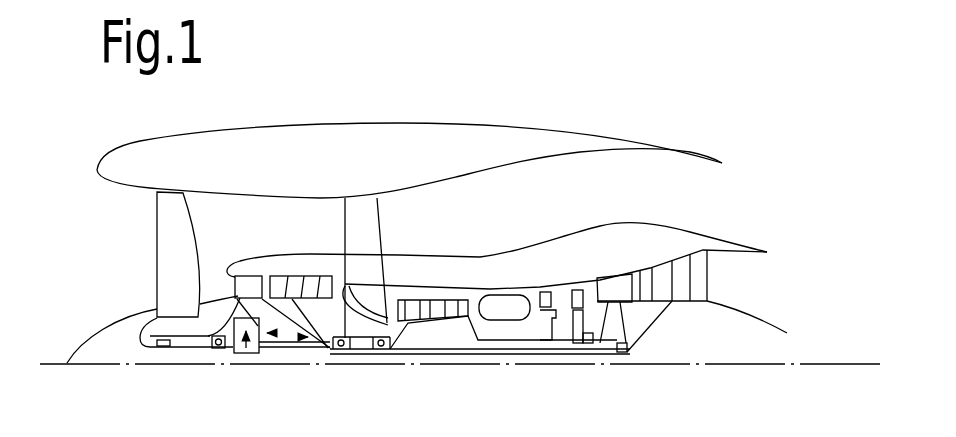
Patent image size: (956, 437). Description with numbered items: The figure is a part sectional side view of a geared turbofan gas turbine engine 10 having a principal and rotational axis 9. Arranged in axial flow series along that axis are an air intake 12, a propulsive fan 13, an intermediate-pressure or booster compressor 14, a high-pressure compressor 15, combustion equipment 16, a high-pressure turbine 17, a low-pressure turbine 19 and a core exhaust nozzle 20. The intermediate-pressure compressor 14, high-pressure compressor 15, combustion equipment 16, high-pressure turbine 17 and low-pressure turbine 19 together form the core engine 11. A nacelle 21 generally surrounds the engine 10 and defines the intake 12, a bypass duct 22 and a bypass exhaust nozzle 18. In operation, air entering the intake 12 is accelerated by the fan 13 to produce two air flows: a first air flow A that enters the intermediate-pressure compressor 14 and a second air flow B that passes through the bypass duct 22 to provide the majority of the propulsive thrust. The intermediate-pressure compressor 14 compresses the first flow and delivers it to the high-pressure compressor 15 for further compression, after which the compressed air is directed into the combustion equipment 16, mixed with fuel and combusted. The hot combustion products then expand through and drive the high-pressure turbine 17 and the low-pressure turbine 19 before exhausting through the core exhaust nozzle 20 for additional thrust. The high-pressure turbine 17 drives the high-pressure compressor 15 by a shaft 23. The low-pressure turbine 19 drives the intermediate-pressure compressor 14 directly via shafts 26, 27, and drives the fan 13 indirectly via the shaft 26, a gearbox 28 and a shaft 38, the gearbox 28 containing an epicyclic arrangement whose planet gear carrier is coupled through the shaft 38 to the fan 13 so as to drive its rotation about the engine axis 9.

The principal and rotational axis 9 is at (670, 366).
The geared turbofan gas turbine engine 10 is at (126, 142).
The core engine 11 is at (490, 270).
The air intake 12 is at (125, 201).
The propulsive fan 13 is at (163, 259).
The intermediate-pressure compressor 14 is at (312, 288).
The high-pressure compressor 15 is at (438, 308).
The combustion equipment 16 is at (503, 312).
The high-pressure turbine 17 is at (563, 295).
The bypass exhaust nozzle 18 is at (679, 183).
The low-pressure turbine 19 is at (683, 270).
The core exhaust nozzle 20 is at (743, 286).
The nacelle 21 is at (364, 140).
The bypass duct 22 is at (603, 197).
The shaft 23 is at (515, 343).
The shaft 26 is at (433, 353).
The shaft 27 is at (305, 321).
The gearbox 28 is at (247, 338).
The shaft 38 is at (187, 348).
The first air flow A is at (224, 287).
The second air flow B is at (236, 228).